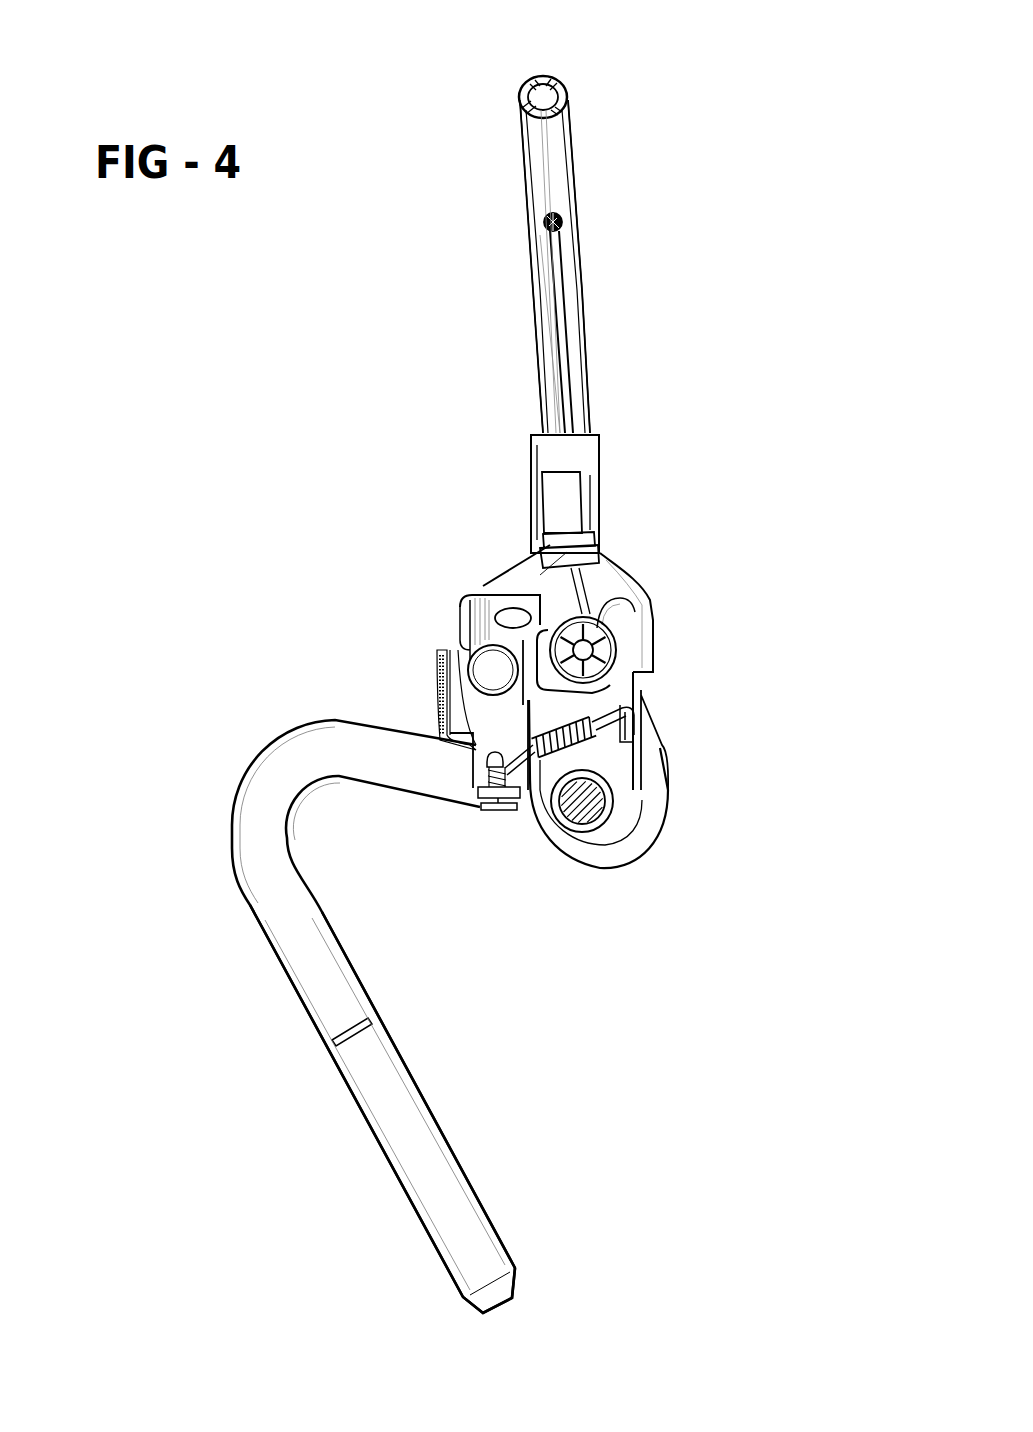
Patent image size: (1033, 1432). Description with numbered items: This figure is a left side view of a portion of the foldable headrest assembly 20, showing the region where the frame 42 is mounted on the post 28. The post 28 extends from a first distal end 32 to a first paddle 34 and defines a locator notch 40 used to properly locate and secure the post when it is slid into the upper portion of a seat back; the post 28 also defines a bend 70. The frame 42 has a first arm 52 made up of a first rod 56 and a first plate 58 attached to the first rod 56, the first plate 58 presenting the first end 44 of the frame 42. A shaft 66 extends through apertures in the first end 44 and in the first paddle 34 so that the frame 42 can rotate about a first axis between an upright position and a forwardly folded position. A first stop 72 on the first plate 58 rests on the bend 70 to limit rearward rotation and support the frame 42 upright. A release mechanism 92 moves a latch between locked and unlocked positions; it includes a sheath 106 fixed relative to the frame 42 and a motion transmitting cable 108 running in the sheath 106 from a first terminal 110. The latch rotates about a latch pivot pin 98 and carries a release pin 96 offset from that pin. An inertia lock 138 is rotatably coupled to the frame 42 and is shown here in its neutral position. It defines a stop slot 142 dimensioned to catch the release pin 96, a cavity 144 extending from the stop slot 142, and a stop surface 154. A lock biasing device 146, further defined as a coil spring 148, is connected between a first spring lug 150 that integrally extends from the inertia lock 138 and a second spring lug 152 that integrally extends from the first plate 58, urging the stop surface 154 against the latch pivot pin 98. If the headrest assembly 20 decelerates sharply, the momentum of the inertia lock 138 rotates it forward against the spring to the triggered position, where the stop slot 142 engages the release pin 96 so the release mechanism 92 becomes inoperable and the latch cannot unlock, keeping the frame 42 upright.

The foldable headrest assembly 20 is at (600, 66).
The frame 42 is at (562, 149).
The motion transmitting cable 108 is at (560, 222).
The sheath 106 is at (550, 300).
The first rod 56 is at (580, 290).
The first arm 52 is at (593, 335).
The release mechanism 92 is at (540, 395).
The first plate 58 is at (590, 448).
The first terminal 110 is at (620, 585).
The stop surface 154 is at (498, 610).
The stop slot 142 is at (522, 625).
The latch pivot pin 98 is at (492, 668).
The first end 44 is at (655, 595).
The release pin 96 is at (585, 650).
The coil spring 148 is at (480, 700).
The first stop 72 is at (440, 700).
The cavity 144 is at (632, 685).
The bend 70 is at (355, 735).
The inertia lock 138 is at (628, 700).
The first spring lug 150 is at (635, 725).
The shaft 66 is at (645, 815).
The first paddle 34 is at (640, 845).
The second spring lug 152 is at (498, 810).
The lock biasing device 146 is at (528, 815).
The locator notch 40 is at (330, 1045).
The first distal end 32 is at (505, 1288).
The post 28 is at (440, 1225).